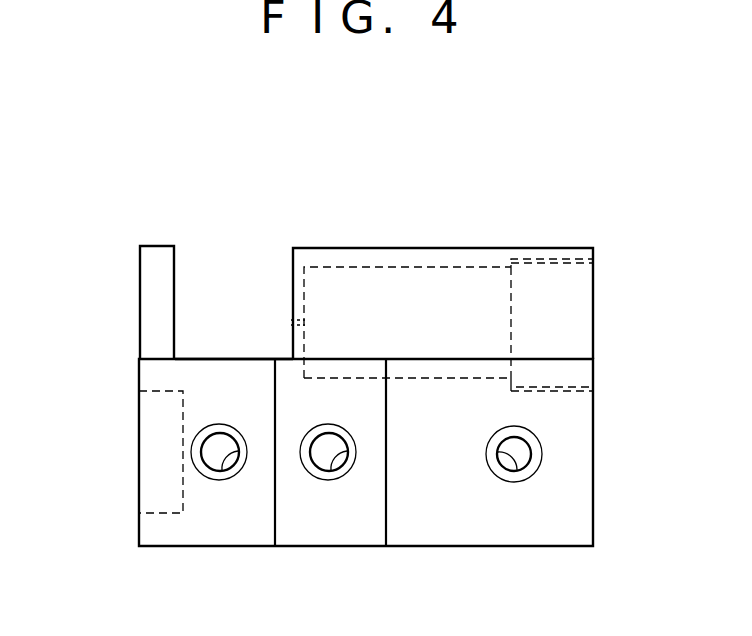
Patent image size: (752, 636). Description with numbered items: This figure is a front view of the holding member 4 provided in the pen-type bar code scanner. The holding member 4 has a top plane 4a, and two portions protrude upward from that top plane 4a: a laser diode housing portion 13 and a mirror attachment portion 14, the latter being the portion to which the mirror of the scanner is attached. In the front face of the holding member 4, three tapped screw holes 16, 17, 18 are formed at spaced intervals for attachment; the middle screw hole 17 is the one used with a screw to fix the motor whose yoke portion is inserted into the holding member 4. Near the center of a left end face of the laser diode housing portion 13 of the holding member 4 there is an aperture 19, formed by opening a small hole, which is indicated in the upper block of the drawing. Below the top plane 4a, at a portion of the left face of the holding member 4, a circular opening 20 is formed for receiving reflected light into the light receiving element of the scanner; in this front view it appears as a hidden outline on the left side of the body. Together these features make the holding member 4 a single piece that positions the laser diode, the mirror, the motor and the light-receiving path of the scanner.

The holding member 4 is at (336, 227).
The top plane 4a is at (257, 358).
The laser diode housing portion 13 is at (439, 257).
The mirror attachment portion 14 is at (153, 308).
The screw hole 16 is at (222, 471).
The screw hole 17 is at (331, 471).
The screw hole 18 is at (517, 471).
The aperture 19 is at (292, 320).
The circular opening 20 is at (155, 448).